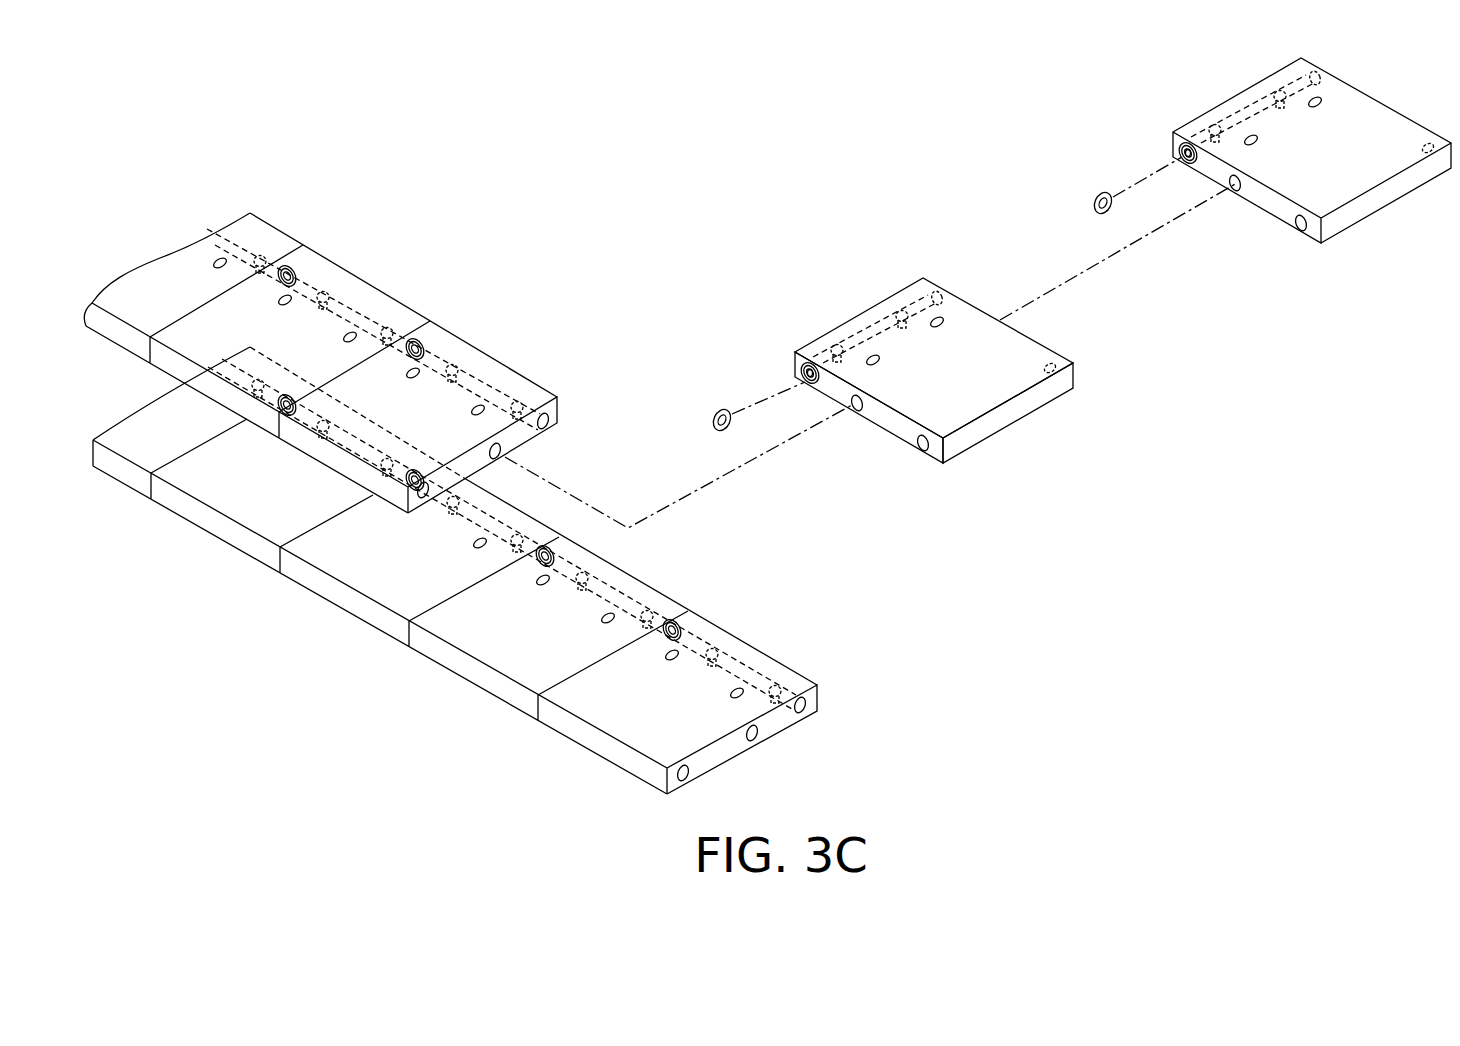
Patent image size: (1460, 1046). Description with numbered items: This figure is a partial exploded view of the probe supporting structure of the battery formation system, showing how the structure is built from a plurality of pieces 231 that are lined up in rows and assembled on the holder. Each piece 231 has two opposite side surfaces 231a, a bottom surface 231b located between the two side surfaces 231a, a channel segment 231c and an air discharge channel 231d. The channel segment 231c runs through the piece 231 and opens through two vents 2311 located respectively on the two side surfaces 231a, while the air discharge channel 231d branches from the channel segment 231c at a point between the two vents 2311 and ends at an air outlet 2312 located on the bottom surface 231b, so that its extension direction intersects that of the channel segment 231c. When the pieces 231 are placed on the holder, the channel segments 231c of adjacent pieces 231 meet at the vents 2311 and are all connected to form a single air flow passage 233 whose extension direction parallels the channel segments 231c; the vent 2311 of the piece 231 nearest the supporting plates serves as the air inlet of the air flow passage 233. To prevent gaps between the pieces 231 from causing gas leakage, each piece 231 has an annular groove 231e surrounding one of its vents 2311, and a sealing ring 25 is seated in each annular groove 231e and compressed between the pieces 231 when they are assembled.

The piece 231 is at (292, 237).
The air flow passage 233 is at (318, 280).
The vent 2311 is at (553, 430).
The air outlet 2312 is at (836, 396).
The side surface 231a is at (887, 425).
The bottom surface 231b is at (1028, 420).
The channel segment 231c is at (910, 300).
The air discharge channel 231d is at (835, 353).
The annular groove 231e is at (796, 368).
The sealing ring 25 is at (720, 409).